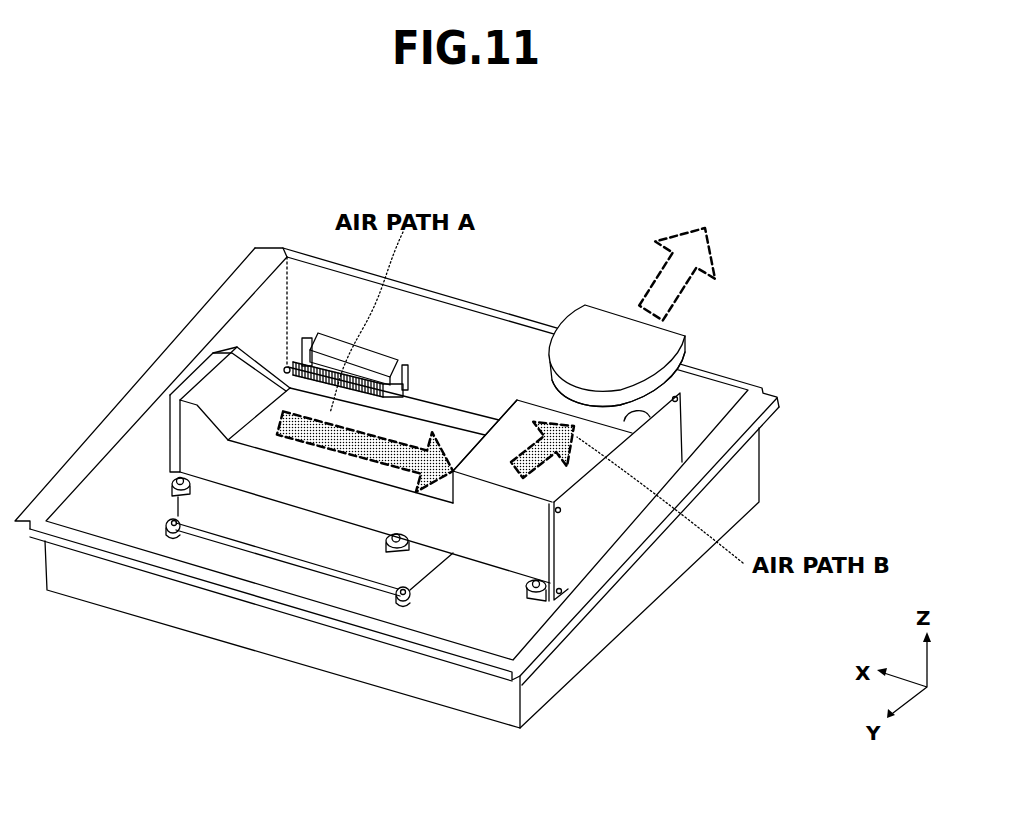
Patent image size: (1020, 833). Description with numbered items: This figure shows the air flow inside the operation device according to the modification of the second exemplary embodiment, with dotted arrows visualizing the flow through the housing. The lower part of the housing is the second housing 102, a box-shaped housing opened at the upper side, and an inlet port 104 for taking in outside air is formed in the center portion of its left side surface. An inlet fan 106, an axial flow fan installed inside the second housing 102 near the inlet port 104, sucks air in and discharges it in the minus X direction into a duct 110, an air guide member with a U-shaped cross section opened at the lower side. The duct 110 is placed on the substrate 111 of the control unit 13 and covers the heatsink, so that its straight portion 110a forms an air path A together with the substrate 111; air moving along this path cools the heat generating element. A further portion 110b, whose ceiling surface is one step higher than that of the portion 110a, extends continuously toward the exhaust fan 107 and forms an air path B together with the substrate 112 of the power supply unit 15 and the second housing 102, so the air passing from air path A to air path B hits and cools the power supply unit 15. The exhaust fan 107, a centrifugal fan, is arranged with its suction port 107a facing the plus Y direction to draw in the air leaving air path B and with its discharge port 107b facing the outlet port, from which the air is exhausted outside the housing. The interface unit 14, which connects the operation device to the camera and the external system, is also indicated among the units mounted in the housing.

The second housing 102 is at (748, 455).
The inlet port 104 is at (132, 371).
The inlet fan 106 is at (172, 422).
The exhaust fan 107 is at (667, 340).
The suction port 107a is at (578, 394).
The discharge port 107b is at (606, 303).
The duct 110 is at (234, 358).
The portion of the duct 110a is at (289, 366).
The portion of the duct 110b is at (490, 467).
The substrate 111 is at (307, 533).
The substrate 112 is at (607, 518).
The control unit 13 is at (240, 527).
The interface unit 14 is at (427, 407).
The power supply unit 15 is at (580, 553).